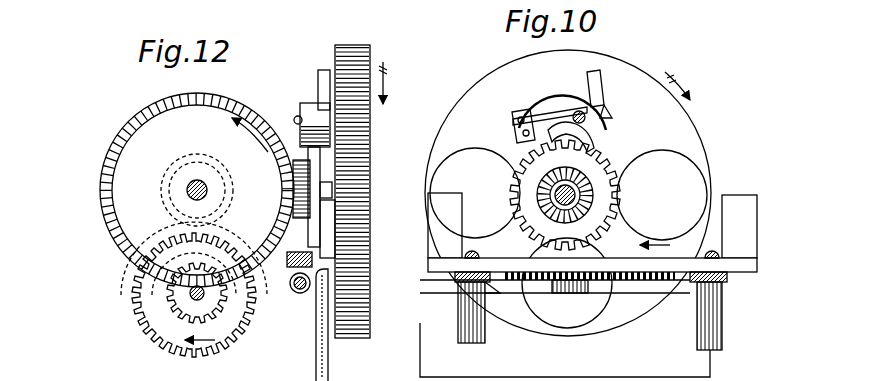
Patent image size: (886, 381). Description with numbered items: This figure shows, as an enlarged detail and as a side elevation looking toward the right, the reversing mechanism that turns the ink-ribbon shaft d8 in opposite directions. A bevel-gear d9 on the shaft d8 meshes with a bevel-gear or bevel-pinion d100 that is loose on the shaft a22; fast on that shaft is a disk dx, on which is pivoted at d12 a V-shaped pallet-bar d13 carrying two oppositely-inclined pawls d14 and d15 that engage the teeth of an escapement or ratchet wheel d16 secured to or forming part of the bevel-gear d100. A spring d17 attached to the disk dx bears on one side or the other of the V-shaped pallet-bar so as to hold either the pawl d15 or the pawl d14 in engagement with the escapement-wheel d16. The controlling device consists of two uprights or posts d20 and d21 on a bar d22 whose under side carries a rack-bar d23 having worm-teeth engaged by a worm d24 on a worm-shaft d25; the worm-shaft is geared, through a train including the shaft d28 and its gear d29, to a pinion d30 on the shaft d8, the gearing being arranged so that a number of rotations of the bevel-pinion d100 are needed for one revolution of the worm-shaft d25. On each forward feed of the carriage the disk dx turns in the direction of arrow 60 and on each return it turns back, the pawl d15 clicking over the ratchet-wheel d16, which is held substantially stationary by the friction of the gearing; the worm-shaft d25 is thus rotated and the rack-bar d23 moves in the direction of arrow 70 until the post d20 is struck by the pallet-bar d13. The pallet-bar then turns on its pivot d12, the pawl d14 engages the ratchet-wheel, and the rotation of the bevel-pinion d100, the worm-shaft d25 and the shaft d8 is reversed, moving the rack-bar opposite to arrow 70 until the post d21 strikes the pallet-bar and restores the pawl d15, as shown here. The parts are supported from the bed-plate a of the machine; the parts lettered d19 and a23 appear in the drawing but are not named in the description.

In FIG. 12, the bevel-gear d9 is at (103, 197).
In FIG. 12, the shaft d8 is at (187, 190).
In FIG. 12, the pinion d30 is at (192, 165).
In FIG. 12, the shaft d28 is at (195, 296).
In FIG. 12, the gear d29 is at (135, 288).
In FIG. 12, the escapement or ratchet wheel d16 is at (322, 158).
In FIG. 10, the escapement or ratchet wheel d16 is at (514, 135).
In FIG. 12, the shaft d19 is at (320, 78).
In FIG. 12, the pivot d12 is at (300, 114).
In FIG. 10, the pivot d12 is at (606, 106).
In FIG. 12, the spring d17 is at (300, 108).
In FIG. 10, the spring d17 is at (540, 105).
In FIG. 12, the shaft a23 is at (283, 188).
In FIG. 12, the bar d22 is at (290, 225).
In FIG. 10, the bar d22 is at (528, 218).
In FIG. 12, the worm d24 is at (292, 286).
In FIG. 10, the worm d24 is at (570, 295).
In FIG. 12, the worm-shaft d25 is at (318, 302).
In FIG. 10, the worm-shaft d25 is at (512, 294).
In FIG. 10, the disk dx is at (462, 94).
In FIG. 10, the shaft a22 is at (612, 180).
In FIG. 10, the bevel-gear d100 is at (598, 193).
In FIG. 10, the pawl d14 is at (515, 116).
In FIG. 10, the pallet-bar d13 is at (590, 92).
In FIG. 10, the pawl d15 is at (594, 131).
In FIG. 10, the arrow 60 is at (685, 82).
In FIG. 10, the arrow 70 is at (672, 241).
In FIG. 10, the upright or post d21 is at (445, 225).
In FIG. 10, the upright or post d20 is at (742, 200).
In FIG. 10, the bed-plate a is at (538, 376).
In FIG. 10, the rack-bar d23 is at (640, 284).